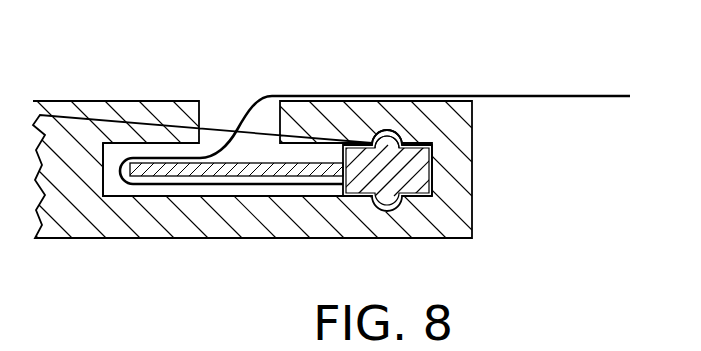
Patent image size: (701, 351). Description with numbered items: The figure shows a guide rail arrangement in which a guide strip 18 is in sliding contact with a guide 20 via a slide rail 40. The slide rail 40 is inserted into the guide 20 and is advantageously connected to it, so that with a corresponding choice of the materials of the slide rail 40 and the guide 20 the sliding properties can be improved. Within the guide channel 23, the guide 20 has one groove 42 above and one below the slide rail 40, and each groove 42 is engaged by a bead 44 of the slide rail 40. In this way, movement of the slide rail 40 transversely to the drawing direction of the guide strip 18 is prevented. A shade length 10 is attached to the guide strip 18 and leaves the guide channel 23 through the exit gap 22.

The shade length 10 is at (552, 97).
The guide strip 18 is at (238, 180).
The guide 20 is at (104, 118).
The exit gap 22 is at (222, 117).
The guide channel 23 is at (113, 188).
The slide rail 40 is at (402, 170).
The groove 42 is at (373, 130).
The bead 44 is at (390, 132).